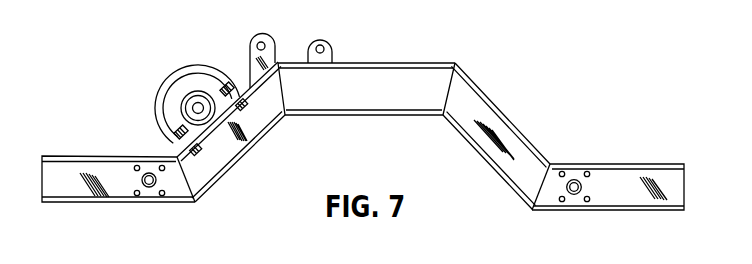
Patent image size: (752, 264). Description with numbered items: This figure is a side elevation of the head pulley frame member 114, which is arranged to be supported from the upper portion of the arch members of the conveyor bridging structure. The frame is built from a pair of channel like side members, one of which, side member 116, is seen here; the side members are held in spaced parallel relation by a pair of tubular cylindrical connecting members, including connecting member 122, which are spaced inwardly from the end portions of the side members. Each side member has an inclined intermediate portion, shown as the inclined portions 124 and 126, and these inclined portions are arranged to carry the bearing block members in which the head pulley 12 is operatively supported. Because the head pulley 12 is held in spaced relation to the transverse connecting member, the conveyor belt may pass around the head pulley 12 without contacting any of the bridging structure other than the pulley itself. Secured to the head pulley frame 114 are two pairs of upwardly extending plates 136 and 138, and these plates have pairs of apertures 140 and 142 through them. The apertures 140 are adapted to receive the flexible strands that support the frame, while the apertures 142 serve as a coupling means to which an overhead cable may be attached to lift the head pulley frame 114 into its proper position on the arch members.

The head pulley 12 is at (160, 82).
The head pulley frame member 114 is at (363, 115).
The channel like side member 116 is at (371, 96).
The tubular cylindrical connecting member 122 is at (582, 186).
The inclined intermediate portion 124 is at (260, 142).
The inclined intermediate portion 126 is at (143, 180).
The upwardly extending plate 136 is at (273, 40).
The upwardly extending plate 138 is at (333, 50).
The aperture 140 is at (262, 40).
The aperture 142 is at (317, 41).